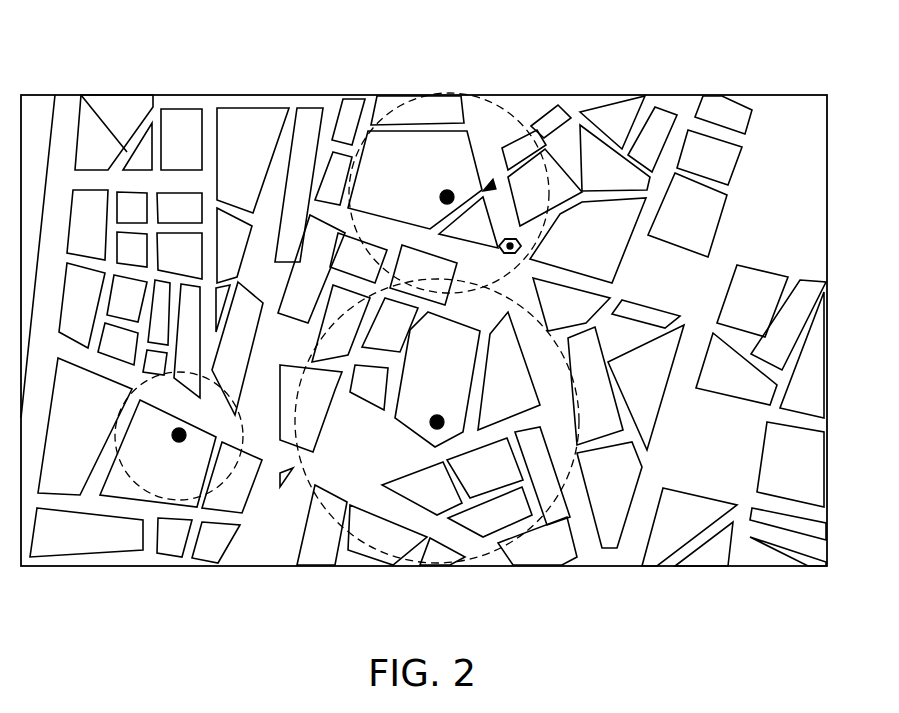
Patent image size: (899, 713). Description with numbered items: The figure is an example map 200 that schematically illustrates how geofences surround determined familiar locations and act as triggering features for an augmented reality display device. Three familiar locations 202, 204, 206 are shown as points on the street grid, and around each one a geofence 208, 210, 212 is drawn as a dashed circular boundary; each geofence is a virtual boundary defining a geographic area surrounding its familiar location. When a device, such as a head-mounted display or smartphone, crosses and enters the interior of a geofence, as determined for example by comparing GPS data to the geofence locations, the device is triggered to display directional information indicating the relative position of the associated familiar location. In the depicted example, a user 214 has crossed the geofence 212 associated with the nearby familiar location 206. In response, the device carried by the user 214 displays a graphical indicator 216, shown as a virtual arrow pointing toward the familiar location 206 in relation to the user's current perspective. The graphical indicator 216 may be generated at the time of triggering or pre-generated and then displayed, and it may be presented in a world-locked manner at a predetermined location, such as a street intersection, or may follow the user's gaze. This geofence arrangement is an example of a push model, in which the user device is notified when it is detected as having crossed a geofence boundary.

The map 200 is at (757, 42).
The familiar location 202 is at (177, 437).
The familiar location 204 is at (437, 416).
The familiar location 206 is at (440, 197).
The geofence 208 is at (127, 478).
The geofence 210 is at (301, 464).
The geofence 212 is at (512, 112).
The user 214 is at (510, 254).
The graphical indicator 216 is at (489, 184).